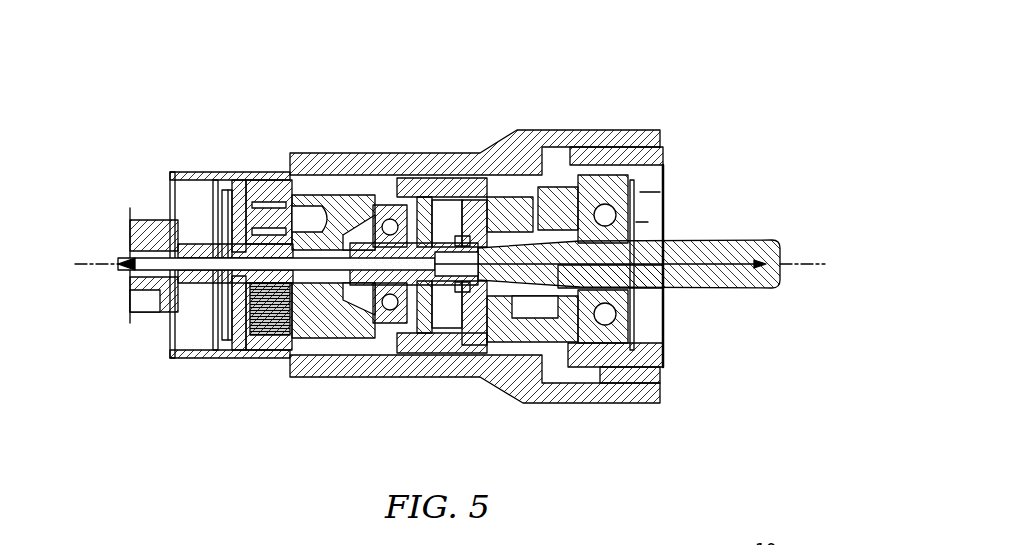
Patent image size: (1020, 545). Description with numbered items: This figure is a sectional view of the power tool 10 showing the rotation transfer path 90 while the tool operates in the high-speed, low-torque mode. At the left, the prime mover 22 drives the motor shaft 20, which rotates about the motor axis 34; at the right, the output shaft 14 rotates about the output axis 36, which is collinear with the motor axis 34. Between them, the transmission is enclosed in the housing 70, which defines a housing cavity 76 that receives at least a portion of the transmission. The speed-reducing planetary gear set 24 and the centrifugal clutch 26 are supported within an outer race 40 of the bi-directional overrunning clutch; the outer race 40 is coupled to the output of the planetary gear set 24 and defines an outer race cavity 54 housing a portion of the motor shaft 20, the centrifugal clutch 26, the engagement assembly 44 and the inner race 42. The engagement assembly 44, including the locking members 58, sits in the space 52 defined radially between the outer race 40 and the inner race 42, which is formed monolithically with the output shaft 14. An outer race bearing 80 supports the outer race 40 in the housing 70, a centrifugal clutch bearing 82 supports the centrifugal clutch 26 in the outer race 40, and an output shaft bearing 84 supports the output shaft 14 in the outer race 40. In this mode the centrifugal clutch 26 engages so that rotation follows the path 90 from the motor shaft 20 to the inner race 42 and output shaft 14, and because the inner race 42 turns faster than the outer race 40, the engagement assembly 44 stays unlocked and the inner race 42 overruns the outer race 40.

The power tool 10 is at (728, 84).
The output shaft 14 is at (755, 250).
The motor shaft 20 is at (218, 256).
The prime mover 22 is at (153, 224).
The speed-reducing planetary gear set 24 is at (269, 208).
The centrifugal clutch 26 is at (440, 350).
The motor axis 34 is at (104, 270).
The output axis 36 is at (822, 264).
The outer race 40 is at (659, 355).
The inner race 42 is at (570, 300).
The engagement assembly 44 is at (519, 342).
The space 52 is at (559, 338).
The outer race cavity 54 is at (660, 192).
The first plurality of locking members 58 is at (561, 195).
The housing 70 is at (513, 143).
The housing cavity 76 is at (645, 222).
The outer race bearing 80 is at (656, 378).
The centrifugal clutch bearing 82 is at (386, 212).
The output shaft bearing 84 is at (606, 192).
The rotation transfer path 90 is at (208, 276).